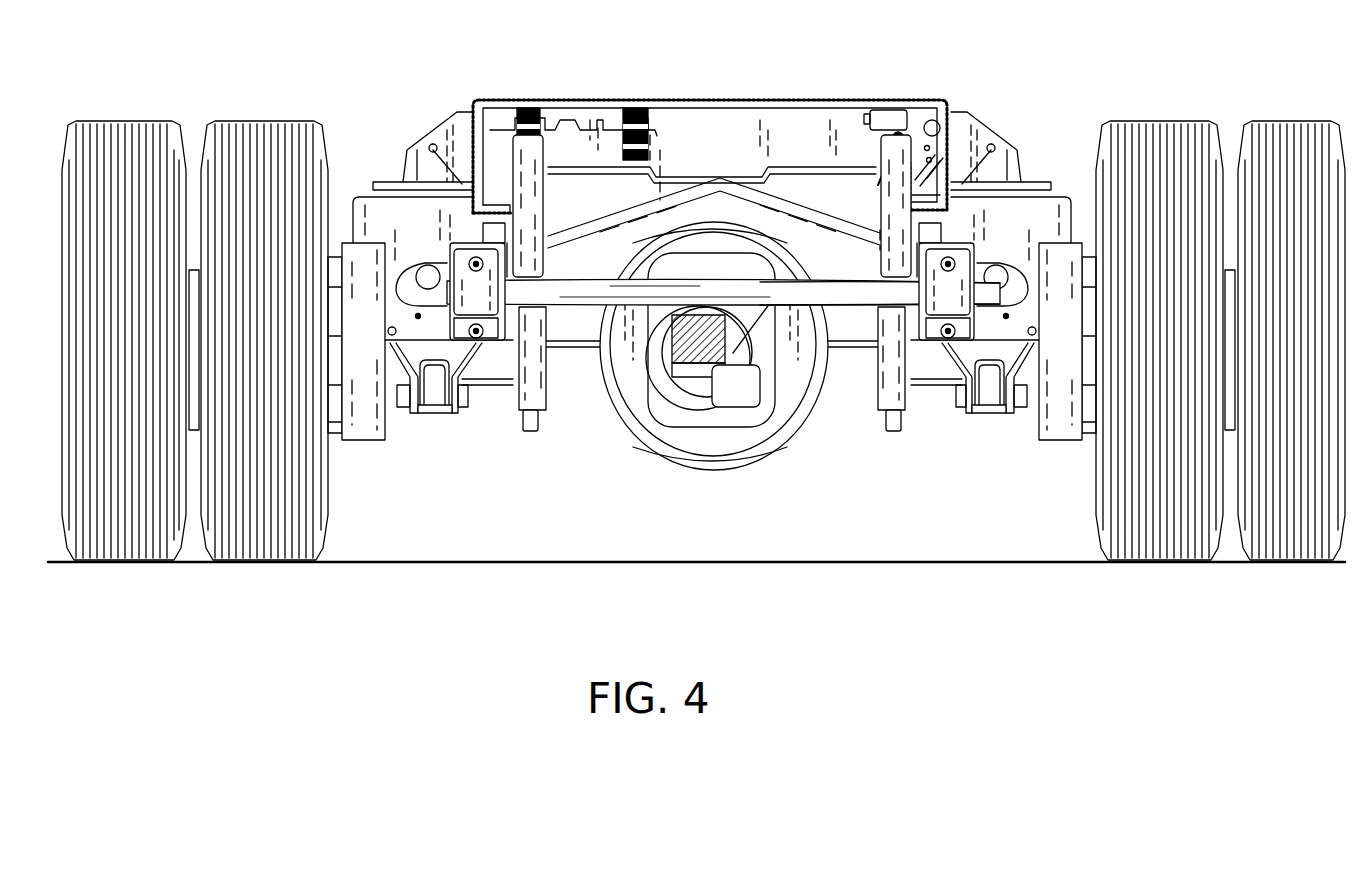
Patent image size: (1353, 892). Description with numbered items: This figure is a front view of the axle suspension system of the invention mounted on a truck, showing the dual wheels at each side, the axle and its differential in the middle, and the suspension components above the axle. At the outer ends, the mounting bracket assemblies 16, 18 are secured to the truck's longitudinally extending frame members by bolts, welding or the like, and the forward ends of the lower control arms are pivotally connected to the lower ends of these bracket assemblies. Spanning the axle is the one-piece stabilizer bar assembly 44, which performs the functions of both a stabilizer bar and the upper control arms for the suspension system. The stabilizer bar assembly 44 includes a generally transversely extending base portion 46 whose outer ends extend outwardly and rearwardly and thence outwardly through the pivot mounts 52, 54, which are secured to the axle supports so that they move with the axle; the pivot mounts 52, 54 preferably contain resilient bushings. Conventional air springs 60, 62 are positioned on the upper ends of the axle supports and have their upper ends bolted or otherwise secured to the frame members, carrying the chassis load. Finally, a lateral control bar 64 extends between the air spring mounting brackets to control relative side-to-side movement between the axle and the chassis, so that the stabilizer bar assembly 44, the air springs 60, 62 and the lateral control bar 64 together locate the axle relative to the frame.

The mounting bracket assembly 16 is at (1065, 447).
The mounting bracket assembly 18 is at (370, 448).
The stabilizer bar assembly 44 is at (603, 290).
The base portion 46 is at (803, 293).
The pivot mount 52 is at (948, 283).
The pivot mount 54 is at (463, 272).
The air spring 60 is at (1050, 207).
The air spring 62 is at (375, 222).
The lateral control bar 64 is at (782, 203).